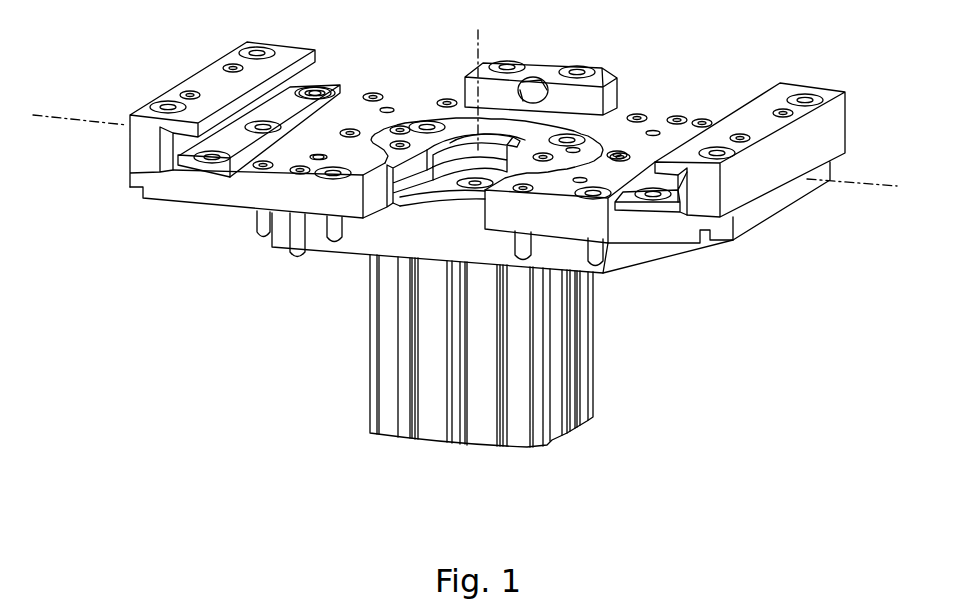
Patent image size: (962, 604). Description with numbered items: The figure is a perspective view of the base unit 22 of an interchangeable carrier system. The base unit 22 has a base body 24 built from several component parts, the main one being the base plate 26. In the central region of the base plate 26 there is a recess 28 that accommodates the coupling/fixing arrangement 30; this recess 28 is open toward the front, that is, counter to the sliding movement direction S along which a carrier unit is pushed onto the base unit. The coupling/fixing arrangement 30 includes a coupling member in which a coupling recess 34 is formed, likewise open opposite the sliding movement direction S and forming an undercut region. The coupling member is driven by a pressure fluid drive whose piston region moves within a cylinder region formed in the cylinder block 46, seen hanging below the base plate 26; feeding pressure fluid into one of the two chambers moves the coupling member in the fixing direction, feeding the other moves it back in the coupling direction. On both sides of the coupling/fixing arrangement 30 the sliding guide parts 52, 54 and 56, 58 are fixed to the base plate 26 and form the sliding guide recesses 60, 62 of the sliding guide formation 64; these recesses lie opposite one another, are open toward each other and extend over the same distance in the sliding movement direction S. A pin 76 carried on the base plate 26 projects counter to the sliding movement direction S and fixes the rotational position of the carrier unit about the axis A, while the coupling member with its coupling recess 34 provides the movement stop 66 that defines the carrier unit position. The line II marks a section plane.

The base unit 22 is at (800, 60).
The base body 24 is at (690, 116).
The base plate 26 is at (660, 233).
The recess 28 is at (447, 188).
The coupling/fixing arrangement 30 is at (413, 108).
The coupling recess 34 is at (533, 128).
The cylinder block 46 is at (593, 387).
The sliding guide part 52 is at (283, 43).
The sliding guide part 54 is at (187, 167).
The sliding guide part 56 is at (847, 115).
The sliding guide part 58 is at (657, 198).
The sliding guide recess 60 is at (308, 80).
The sliding guide recess 62 is at (677, 183).
The sliding guide formation 64 is at (857, 88).
The movement stop 66 is at (488, 136).
The pin 76 is at (521, 147).
The axis A is at (483, 44).
The sliding movement direction S is at (373, 190).
The section line II is at (914, 231).